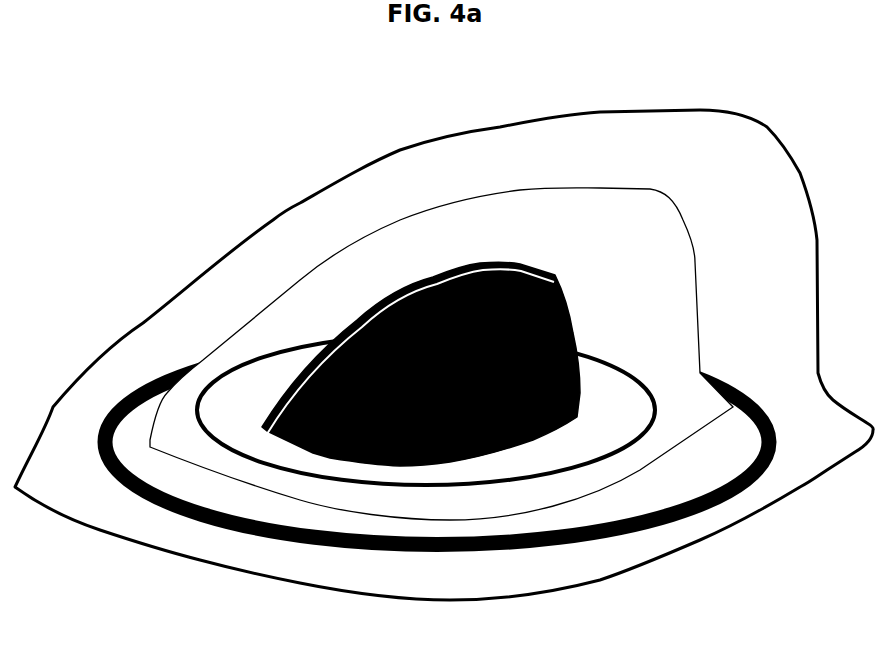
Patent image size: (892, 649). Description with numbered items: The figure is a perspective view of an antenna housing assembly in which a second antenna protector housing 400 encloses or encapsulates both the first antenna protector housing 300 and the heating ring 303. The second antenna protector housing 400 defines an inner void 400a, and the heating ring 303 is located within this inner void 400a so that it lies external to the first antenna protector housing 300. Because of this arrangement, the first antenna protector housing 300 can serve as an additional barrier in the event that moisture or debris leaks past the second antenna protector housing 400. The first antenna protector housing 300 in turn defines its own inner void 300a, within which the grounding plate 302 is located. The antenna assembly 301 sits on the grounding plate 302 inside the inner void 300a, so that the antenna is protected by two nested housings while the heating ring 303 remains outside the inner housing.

The second antenna protector housing 400 is at (640, 112).
The inner void 400a is at (773, 308).
The first antenna protector housing 300 is at (640, 194).
The inner void 300a is at (667, 308).
The antenna assembly 301 is at (533, 263).
The grounding plate 302 is at (246, 388).
The heating ring 303 is at (167, 374).